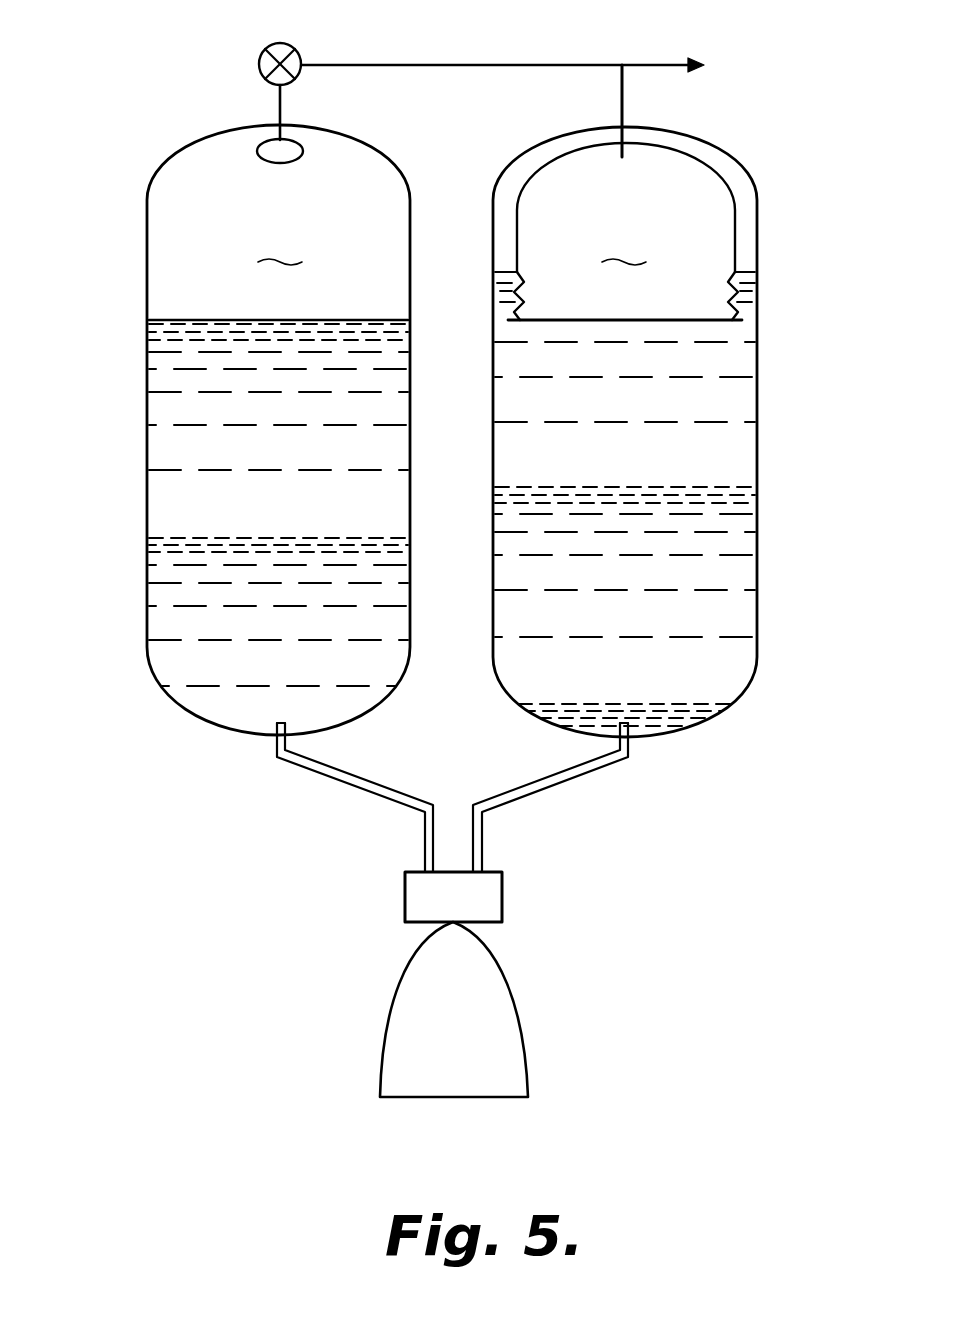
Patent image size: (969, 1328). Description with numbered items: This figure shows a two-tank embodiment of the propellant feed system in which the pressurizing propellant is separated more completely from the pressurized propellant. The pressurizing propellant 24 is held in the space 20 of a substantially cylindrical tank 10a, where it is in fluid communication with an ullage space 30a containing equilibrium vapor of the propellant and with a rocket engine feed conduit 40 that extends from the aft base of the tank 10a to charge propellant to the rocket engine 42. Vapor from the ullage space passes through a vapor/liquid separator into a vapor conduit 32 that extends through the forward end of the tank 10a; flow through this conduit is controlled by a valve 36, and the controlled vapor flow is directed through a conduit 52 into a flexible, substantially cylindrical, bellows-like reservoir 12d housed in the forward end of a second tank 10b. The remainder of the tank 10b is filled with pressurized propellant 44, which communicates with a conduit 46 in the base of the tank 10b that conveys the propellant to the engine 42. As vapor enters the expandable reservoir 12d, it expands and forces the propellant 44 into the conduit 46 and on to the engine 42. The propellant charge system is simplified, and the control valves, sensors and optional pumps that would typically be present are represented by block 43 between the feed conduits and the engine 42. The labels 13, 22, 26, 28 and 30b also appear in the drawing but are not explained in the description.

The substantially cylindrical tank 10a is at (147, 390).
The second tank 10b is at (757, 405).
The bellows-like reservoir 12d is at (713, 325).
The bellows bladder 13 is at (506, 278).
The space 20 is at (168, 484).
The second propellant 22 is at (735, 483).
The pressurizing propellant 24 is at (295, 515).
The propellant surface 26 is at (200, 320).
The tank inlet fitting 28 is at (258, 151).
The ullage space 30a is at (288, 244).
The ullage volume of second tank 30b is at (632, 244).
The vapor conduit 32 is at (278, 112).
The valve 36 is at (264, 52).
The rocket engine feed conduit 40 is at (275, 752).
The rocket engine 42 is at (476, 1040).
The block 43 is at (503, 895).
The pressurized propellant 44 is at (647, 478).
The conduit 46 is at (630, 748).
The conduit 52 is at (418, 64).